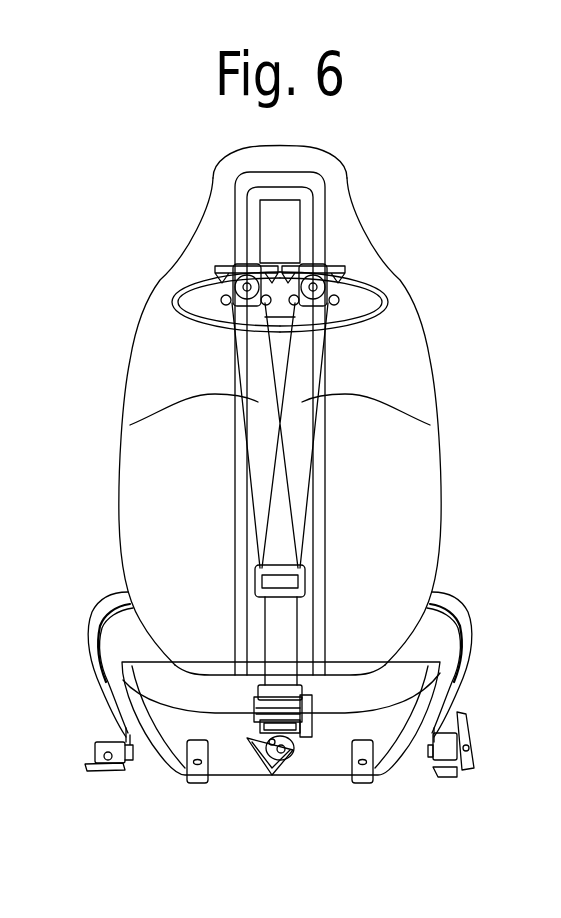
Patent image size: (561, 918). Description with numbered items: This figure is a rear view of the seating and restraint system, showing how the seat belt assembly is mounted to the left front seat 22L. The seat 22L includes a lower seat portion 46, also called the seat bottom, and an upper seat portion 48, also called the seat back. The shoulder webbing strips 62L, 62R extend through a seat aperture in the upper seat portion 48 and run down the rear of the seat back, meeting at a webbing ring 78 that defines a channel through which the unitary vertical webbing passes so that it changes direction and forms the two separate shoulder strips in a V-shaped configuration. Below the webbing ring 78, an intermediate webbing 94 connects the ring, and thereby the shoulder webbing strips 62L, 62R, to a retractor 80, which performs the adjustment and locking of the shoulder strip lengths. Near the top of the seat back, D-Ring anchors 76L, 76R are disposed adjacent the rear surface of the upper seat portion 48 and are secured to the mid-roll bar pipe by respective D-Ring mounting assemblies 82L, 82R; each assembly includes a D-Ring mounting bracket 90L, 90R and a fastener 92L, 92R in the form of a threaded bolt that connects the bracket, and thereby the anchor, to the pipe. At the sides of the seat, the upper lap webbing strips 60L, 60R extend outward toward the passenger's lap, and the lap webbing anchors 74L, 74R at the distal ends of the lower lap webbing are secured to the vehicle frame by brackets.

The upper seat portion 48 is at (345, 172).
The D-Ring mounting assembly 82L is at (229, 262).
The D-Ring mounting assembly 82R is at (331, 262).
The D-Ring mounting bracket 90L is at (243, 288).
The D-Ring mounting bracket 90R is at (317, 288).
The D-Ring anchor 76L is at (220, 298).
The D-Ring anchor 76R is at (340, 298).
The fastener 92L is at (190, 318).
The fastener 92R is at (370, 318).
The shoulder webbing strip 62L is at (130, 425).
The shoulder webbing strip 62R is at (430, 425).
The webbing ring 78 is at (305, 582).
The intermediate webbing 94 is at (285, 630).
The retractor 80 is at (272, 707).
The upper lap webbing strip 60L is at (103, 612).
The upper lap webbing strip 60R is at (462, 622).
The lap webbing anchor 74L is at (95, 753).
The lap webbing anchor 74R is at (472, 743).
The front seat 22L is at (245, 778).
The lower seat portion 46 is at (321, 779).